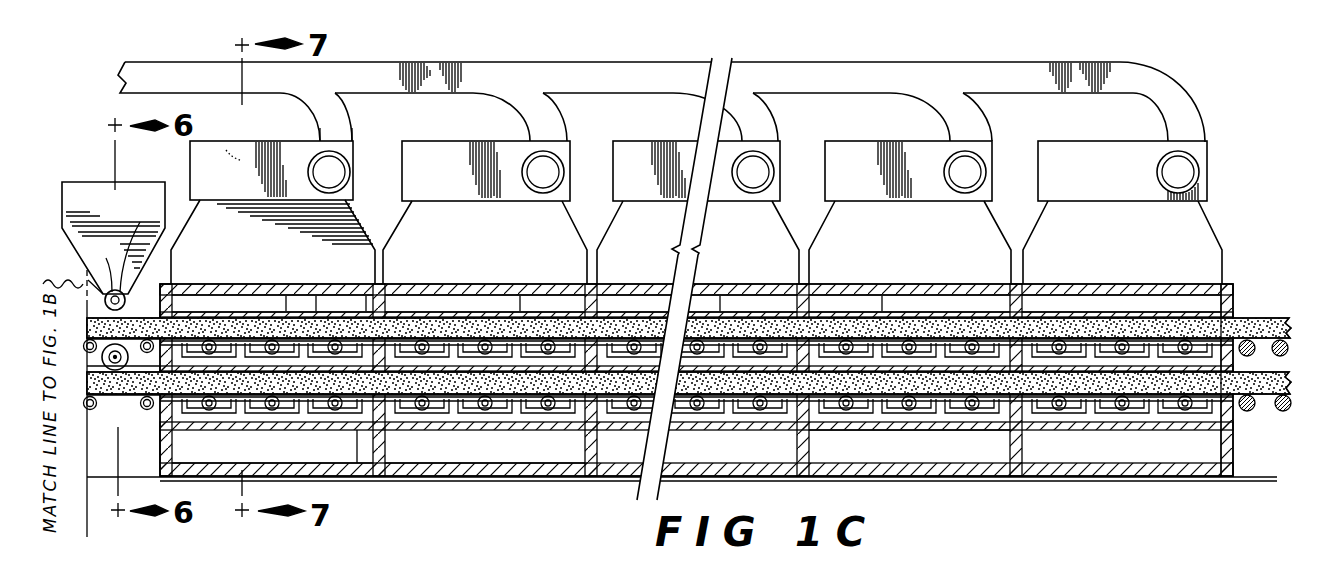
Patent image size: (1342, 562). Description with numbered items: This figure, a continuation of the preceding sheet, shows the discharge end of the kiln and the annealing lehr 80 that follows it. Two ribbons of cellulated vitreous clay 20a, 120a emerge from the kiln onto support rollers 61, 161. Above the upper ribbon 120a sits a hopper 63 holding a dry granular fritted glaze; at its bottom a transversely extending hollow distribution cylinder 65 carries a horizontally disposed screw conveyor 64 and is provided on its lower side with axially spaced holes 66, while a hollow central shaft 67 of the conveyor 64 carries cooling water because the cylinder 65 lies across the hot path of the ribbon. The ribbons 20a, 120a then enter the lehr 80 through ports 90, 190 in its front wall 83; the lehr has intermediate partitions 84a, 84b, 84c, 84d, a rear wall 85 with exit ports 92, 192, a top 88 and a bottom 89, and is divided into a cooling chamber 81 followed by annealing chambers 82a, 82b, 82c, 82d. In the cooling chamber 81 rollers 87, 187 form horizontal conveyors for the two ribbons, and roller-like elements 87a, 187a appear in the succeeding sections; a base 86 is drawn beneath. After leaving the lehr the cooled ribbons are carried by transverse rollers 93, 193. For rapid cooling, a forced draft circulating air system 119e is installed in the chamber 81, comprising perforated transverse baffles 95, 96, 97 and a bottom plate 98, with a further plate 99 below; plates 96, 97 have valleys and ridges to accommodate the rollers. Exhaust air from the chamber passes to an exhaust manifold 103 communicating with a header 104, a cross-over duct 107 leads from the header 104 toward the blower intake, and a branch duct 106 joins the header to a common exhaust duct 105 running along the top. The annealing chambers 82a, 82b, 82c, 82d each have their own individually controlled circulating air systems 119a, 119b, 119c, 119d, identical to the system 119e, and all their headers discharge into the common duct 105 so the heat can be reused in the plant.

The common exhaust duct 105 is at (183, 62).
The header 104 is at (280, 141).
The branch duct 106 is at (350, 122).
The cross-over duct 107 is at (354, 152).
The forced draft circulating air system 119e is at (190, 162).
The circulating air system 119a is at (481, 141).
The circulating air system 119b is at (676, 141).
The circulating air system 119c is at (904, 142).
The circulating air system 119d is at (1112, 142).
The exhaust manifold 103 is at (350, 224).
The hopper 63 is at (62, 222).
The distribution cylinder 65 is at (139, 248).
The screw conveyor 64 is at (88, 280).
The hollow central shaft 67 is at (99, 268).
The holes 66 is at (127, 301).
The port 190 is at (206, 288).
The cooling chamber 81 is at (253, 290).
The baffle 95 is at (291, 294).
The baffle 96 is at (369, 290).
The rollers 187 is at (316, 264).
The member 187a is at (522, 288).
The intermediate partition 84a is at (390, 284).
The intermediate partition 84b is at (617, 288).
The intermediate partition 84c is at (826, 288).
The intermediate partition 84d is at (1043, 288).
The port 192 is at (401, 284).
The annealing lehr 80 is at (445, 284).
The annealing chamber 82a is at (476, 284).
The annealing chamber 82b is at (748, 288).
The annealing chamber 82c is at (937, 288).
The annealing chamber 82d is at (1100, 288).
The top 88 is at (720, 288).
The cellulated vitreous clay ribbon 120a is at (882, 288).
The rear wall 85 is at (1235, 299).
The transverse rollers 193 is at (1290, 353).
The port 92 is at (1237, 381).
The transverse rollers 93 is at (1282, 412).
The support roller 61 is at (97, 410).
The support roller 161 is at (146, 355).
The front wall 83 is at (161, 449).
The port 90 is at (200, 412).
The baffle 97 is at (246, 380).
The bottom plate 98 is at (312, 410).
The rollers 87 is at (348, 410).
The clip 87a is at (488, 412).
The base 86 is at (264, 463).
The plate 99 is at (357, 431).
The bottom 89 is at (505, 470).
The cellulated vitreous clay ribbon 20a is at (872, 402).